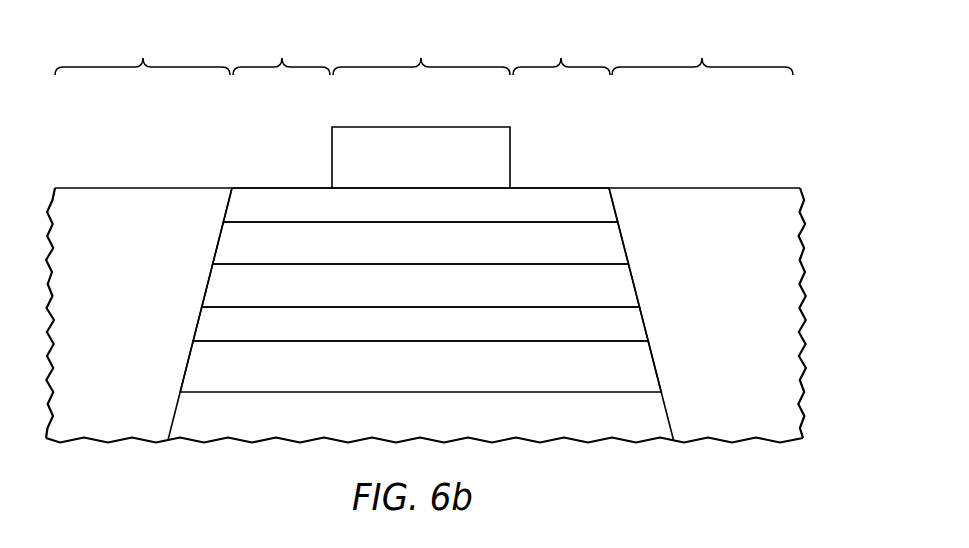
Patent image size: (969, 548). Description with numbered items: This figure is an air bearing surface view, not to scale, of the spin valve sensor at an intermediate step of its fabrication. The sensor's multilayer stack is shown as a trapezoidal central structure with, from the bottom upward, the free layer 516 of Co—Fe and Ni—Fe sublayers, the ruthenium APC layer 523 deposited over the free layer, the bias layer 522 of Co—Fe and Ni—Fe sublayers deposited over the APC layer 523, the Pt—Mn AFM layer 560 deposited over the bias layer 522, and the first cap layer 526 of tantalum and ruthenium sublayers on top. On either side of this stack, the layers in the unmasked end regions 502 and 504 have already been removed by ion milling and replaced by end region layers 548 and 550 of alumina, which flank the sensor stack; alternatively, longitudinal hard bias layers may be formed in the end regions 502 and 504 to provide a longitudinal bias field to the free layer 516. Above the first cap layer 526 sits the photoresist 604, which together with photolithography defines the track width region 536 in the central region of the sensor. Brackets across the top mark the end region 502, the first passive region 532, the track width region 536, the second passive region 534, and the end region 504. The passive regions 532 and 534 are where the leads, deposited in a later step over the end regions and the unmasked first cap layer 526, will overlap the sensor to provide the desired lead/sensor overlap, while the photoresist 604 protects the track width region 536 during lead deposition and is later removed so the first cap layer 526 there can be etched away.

The end region 502 is at (142, 53).
The first passive region 532 is at (281, 53).
The track width region 536 is at (421, 53).
The second passive region 534 is at (561, 53).
The end region 504 is at (702, 53).
The photoresist 604 is at (435, 171).
The first cap layer 526 is at (435, 215).
The AFM layer 560 is at (435, 255).
The bias layer 522 is at (435, 297).
The APC layer 523 is at (435, 337).
The free layer 516 is at (435, 377).
The end region layer 548 is at (145, 266).
The end region layer 550 is at (752, 261).